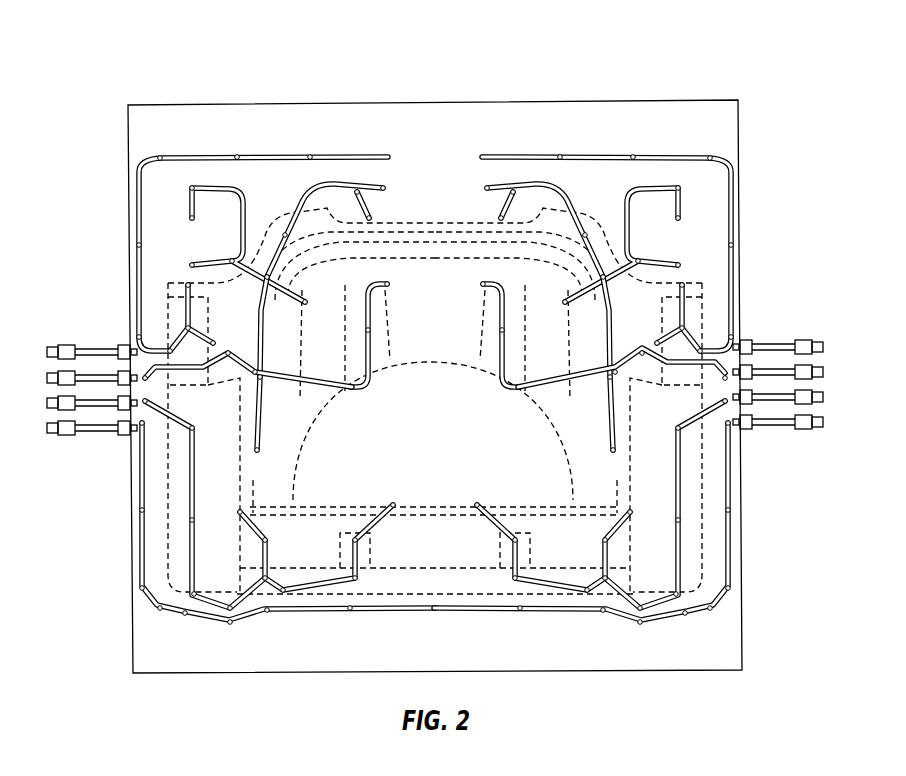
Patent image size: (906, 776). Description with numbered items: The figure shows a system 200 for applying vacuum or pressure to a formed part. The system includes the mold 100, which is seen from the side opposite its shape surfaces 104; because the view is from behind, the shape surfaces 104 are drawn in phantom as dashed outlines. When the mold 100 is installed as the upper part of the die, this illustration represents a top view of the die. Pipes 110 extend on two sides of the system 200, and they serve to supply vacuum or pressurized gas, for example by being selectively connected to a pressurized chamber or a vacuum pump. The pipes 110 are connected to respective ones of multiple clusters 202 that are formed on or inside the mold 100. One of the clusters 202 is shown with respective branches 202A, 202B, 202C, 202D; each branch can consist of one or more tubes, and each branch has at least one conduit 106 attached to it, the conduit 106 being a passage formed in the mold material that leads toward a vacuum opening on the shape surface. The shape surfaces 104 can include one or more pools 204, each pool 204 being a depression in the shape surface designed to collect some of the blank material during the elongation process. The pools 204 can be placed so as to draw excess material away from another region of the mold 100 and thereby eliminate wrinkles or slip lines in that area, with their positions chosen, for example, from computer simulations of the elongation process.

The mold 100 is at (627, 101).
The shape surfaces 104 is at (432, 218).
The conduit 106 is at (393, 504).
The pipes 110 is at (90, 350).
The system 200 is at (196, 57).
The clusters 202 is at (354, 401).
The branch 202A is at (383, 282).
The branch 202B is at (320, 182).
The branch 202C is at (223, 187).
The branch 202D is at (267, 412).
The pools 204 is at (337, 218).